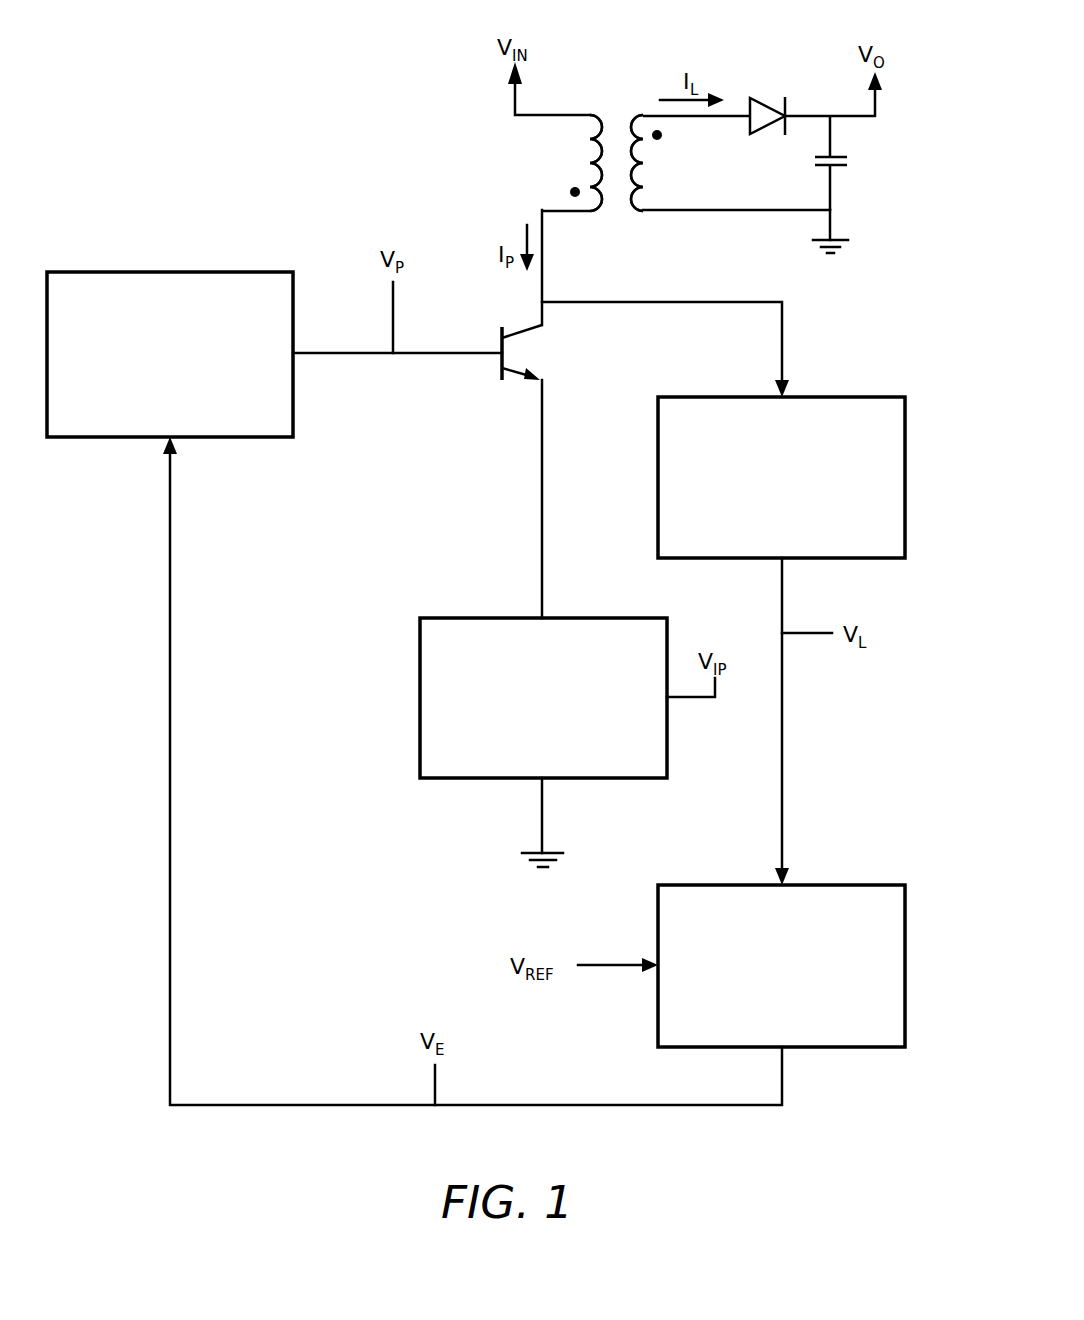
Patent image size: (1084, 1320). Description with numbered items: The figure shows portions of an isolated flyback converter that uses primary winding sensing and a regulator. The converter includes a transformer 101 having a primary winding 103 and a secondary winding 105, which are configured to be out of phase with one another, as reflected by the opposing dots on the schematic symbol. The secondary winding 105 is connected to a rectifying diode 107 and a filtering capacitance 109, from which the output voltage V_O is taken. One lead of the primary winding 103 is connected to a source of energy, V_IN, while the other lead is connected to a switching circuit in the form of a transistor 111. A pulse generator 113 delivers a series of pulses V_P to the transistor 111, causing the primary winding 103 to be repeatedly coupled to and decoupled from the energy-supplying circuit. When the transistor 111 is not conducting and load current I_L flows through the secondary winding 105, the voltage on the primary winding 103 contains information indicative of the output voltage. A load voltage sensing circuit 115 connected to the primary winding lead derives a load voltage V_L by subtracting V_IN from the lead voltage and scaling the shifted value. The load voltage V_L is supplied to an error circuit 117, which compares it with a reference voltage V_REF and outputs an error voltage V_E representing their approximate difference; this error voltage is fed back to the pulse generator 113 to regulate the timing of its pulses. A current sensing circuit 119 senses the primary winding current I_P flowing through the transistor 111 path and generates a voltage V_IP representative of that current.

The transformer 101 is at (617, 115).
The primary winding 103 is at (593, 163).
The secondary winding 105 is at (630, 175).
The rectifying diode 107 is at (763, 100).
The filtering capacitance 109 is at (850, 160).
The transistor 111 is at (505, 358).
The pulse generator 113 is at (167, 272).
The load voltage sensing circuit 115 is at (727, 397).
The error circuit 117 is at (762, 885).
The current sensing circuit 119 is at (510, 618).